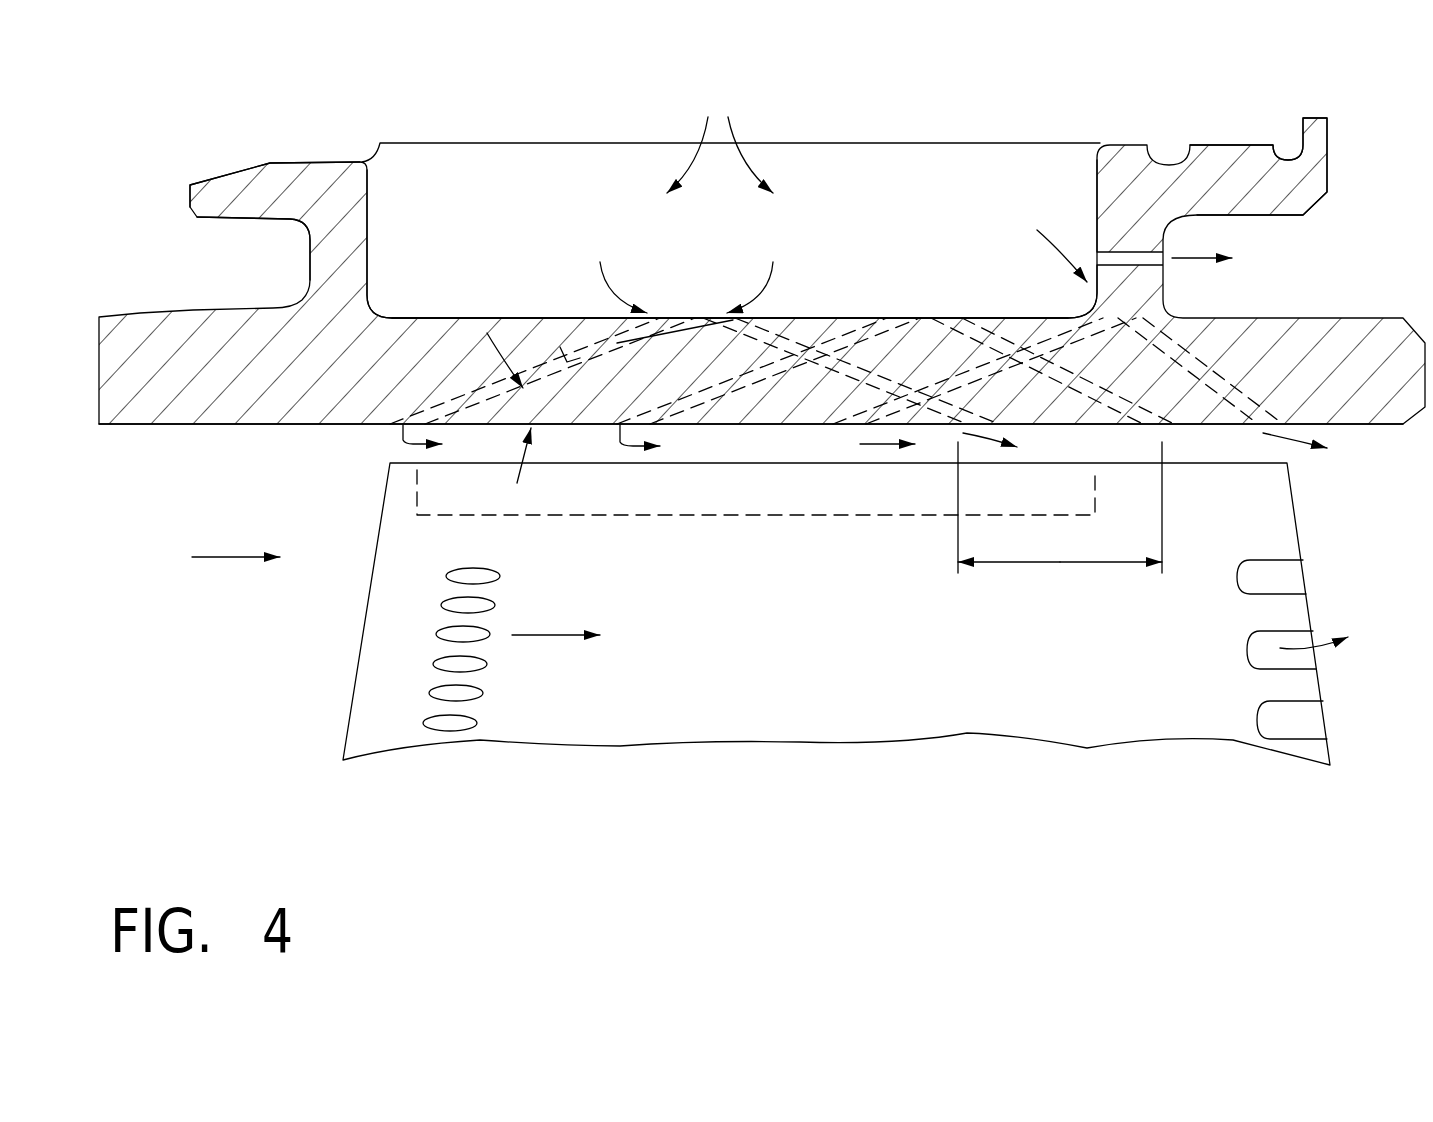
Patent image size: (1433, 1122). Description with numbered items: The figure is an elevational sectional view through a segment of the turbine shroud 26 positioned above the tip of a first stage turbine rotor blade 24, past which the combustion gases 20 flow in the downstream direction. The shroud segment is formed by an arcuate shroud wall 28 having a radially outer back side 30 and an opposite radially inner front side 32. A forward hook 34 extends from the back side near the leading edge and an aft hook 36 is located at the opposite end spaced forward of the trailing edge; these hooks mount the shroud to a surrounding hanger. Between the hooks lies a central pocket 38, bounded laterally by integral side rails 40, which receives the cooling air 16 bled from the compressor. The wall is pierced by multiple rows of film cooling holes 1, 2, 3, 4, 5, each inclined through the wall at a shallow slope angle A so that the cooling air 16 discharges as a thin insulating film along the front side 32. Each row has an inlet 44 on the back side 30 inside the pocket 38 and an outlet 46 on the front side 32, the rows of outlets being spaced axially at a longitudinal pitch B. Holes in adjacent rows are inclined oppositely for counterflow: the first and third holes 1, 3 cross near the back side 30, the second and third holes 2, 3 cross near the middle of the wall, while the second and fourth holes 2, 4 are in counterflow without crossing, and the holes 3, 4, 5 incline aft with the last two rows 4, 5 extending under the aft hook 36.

The first film cooling holes 1 is at (550, 337).
The second film cooling holes 2 is at (758, 405).
The third film cooling holes 3 is at (830, 387).
The fourth film cooling holes 4 is at (1032, 357).
The fifth film cooling holes 5 is at (1203, 360).
The cooling air 16 is at (707, 132).
The combustion gases 20 is at (220, 557).
The first stage turbine rotor blades 24 is at (877, 697).
The turbine shroud 26 is at (193, 253).
The shroud wall 28 is at (1347, 390).
The back side 30 is at (560, 318).
The front side 32 is at (337, 425).
The forward hook 34 is at (228, 172).
The aft hook 36 is at (1233, 147).
The central pocket 38 is at (942, 189).
The side rails 40 is at (1005, 145).
The inlet 44 is at (705, 318).
The outlet 46 is at (1167, 440).
The slope angle A is at (517, 481).
The longitudinal pitch B is at (1060, 562).